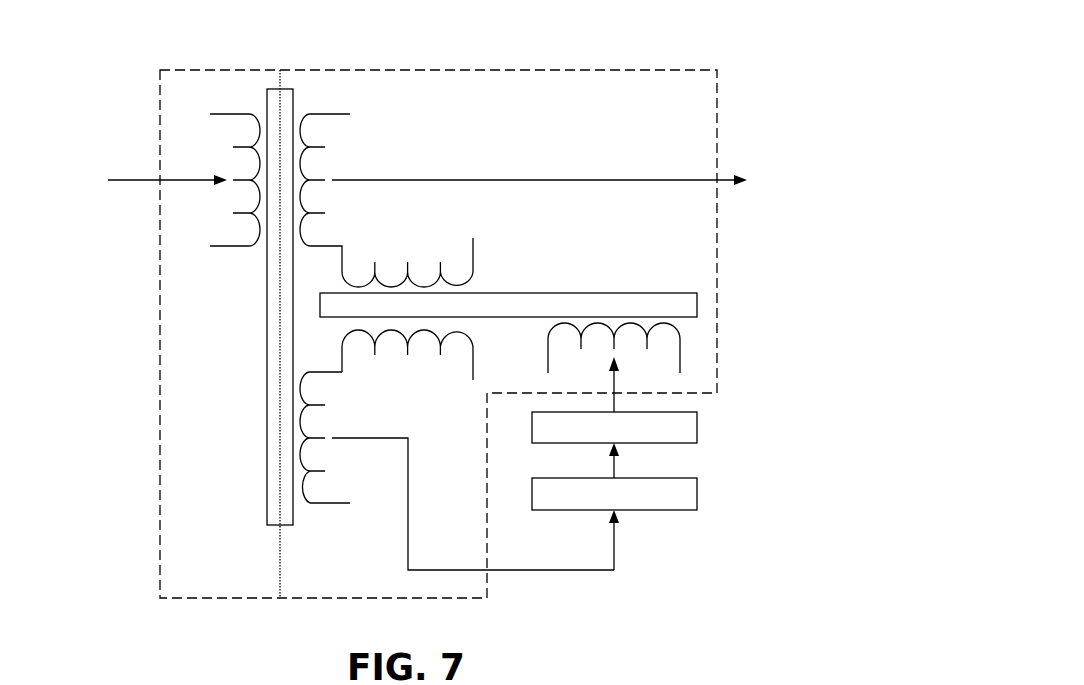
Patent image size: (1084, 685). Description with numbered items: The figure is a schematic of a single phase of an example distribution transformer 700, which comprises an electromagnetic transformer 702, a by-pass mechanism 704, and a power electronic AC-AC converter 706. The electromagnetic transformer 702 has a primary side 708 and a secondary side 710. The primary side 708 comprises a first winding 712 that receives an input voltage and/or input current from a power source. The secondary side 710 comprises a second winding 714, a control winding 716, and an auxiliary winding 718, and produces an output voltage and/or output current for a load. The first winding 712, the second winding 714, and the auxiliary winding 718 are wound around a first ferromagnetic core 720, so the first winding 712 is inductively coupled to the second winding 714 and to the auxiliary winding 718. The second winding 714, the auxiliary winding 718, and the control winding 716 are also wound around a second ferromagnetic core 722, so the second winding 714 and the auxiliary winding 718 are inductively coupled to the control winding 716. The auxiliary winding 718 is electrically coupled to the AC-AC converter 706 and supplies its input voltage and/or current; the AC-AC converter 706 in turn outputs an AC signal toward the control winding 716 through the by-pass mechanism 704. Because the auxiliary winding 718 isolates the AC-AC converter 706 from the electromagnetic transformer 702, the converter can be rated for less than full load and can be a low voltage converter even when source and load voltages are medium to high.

The distribution transformer 700 is at (114, 48).
The electromagnetic transformer 702 is at (160, 598).
The by-pass mechanism 704 is at (697, 443).
The AC-AC converter 706 is at (697, 510).
The primary side 708 is at (231, 72).
The secondary side 710 is at (502, 78).
The first winding 712 is at (230, 249).
The second winding 714 is at (473, 240).
The control winding 716 is at (682, 361).
The auxiliary winding 718 is at (475, 366).
The first ferromagnetic core 720 is at (267, 373).
The second ferromagnetic core 722 is at (603, 293).